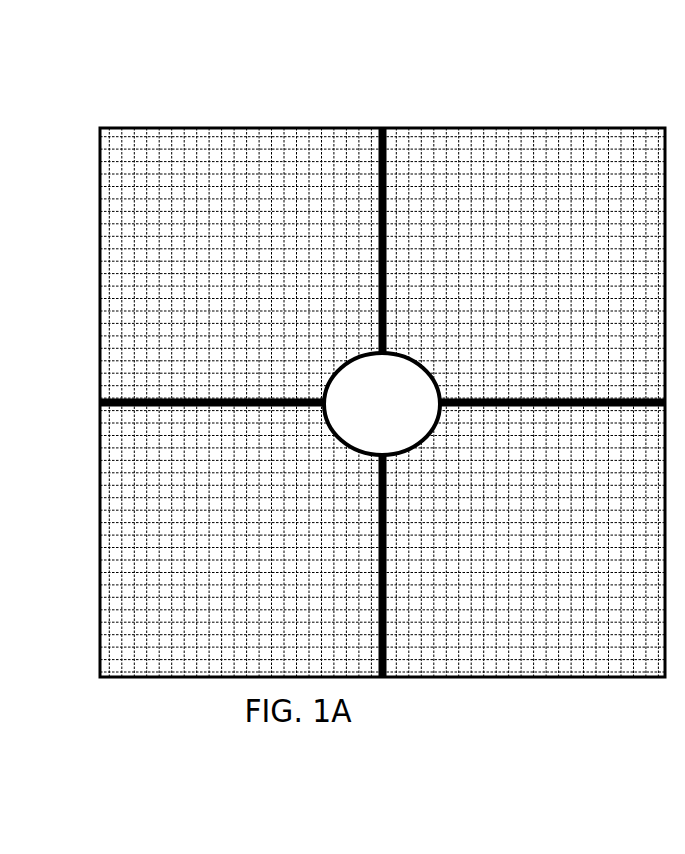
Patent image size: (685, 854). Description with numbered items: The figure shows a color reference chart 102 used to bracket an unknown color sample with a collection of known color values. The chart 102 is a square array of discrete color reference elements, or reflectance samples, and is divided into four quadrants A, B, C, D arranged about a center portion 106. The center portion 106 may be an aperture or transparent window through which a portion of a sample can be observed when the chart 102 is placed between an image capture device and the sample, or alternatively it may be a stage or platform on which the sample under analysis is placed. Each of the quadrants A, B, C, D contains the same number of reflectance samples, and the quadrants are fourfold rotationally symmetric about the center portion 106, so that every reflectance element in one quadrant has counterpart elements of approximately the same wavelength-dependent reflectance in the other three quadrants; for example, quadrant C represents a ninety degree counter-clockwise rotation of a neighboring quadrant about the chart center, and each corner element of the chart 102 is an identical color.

The color reference chart 102 is at (382, 356).
The center portion 106 is at (382, 404).
The quadrant A is at (241, 265).
The quadrant B is at (524, 265).
The quadrant C is at (241, 540).
The quadrant D is at (524, 540).